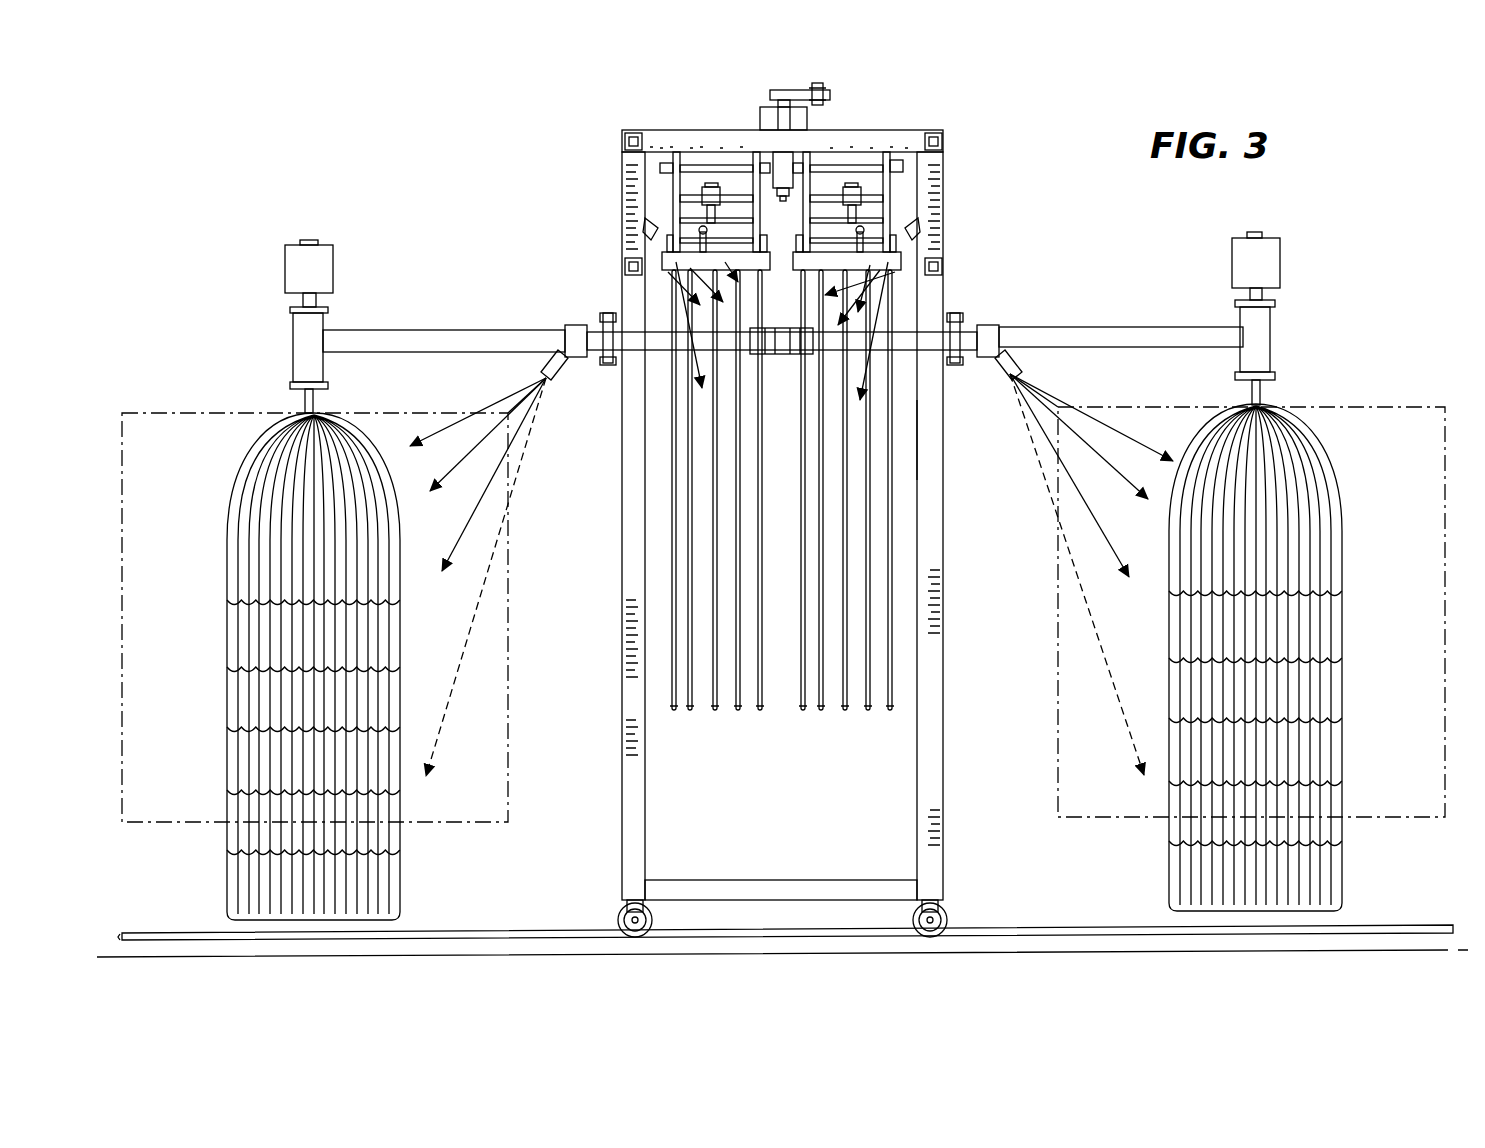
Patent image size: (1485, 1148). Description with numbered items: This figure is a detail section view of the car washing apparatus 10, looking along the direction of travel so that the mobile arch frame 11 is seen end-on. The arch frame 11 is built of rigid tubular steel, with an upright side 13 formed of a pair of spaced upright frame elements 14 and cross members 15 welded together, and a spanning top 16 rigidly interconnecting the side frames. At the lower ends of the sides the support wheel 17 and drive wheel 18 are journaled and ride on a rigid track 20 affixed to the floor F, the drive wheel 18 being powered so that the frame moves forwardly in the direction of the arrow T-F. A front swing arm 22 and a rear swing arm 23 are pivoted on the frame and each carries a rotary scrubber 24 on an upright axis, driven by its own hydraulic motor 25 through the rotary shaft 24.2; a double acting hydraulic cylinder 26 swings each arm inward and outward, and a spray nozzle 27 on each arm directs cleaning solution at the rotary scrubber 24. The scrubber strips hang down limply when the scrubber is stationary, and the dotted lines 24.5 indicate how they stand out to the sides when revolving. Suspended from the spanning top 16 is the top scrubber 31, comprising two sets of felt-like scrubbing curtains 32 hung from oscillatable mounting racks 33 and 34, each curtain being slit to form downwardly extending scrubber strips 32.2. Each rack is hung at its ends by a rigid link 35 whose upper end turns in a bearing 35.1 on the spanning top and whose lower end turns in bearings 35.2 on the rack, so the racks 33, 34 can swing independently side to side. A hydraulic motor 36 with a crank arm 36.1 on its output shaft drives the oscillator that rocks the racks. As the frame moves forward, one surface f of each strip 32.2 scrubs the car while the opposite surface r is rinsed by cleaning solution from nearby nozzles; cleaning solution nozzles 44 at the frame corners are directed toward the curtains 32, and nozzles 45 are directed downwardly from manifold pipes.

The car washing apparatus 10 is at (782, 510).
The mobile arch frame 11 is at (787, 504).
The upright side 13 is at (935, 441).
The upright frame elements 14 is at (622, 768).
The cross members 15 is at (670, 135).
The spanning top 16 is at (622, 140).
The support wheel 17 is at (622, 915).
The drive wheel 18 is at (948, 908).
The track 20 is at (483, 930).
The front swing arm 22 is at (378, 330).
The rear swing arm 23 is at (1122, 327).
The rotary scrubber 24 is at (240, 478).
The rotary shaft 24.2 is at (305, 400).
The dotted lines 24.5 is at (510, 596).
The hydraulic motor 25 is at (285, 268).
The double acting hydraulic cylinder 26 is at (782, 356).
The spray nozzle 27 is at (556, 376).
The top scrubber 31 is at (895, 528).
The scrubbing curtains 32 is at (788, 510).
The scrubber strips 32.2 is at (770, 712).
The mounting rack 33 is at (901, 262).
The mounting rack 34 is at (662, 262).
The rigid link 35 is at (673, 190).
The bearing 35.1 is at (903, 160).
The bearings 35.2 is at (861, 200).
The hydraulic motor 36 is at (805, 122).
The crank arm 36.1 is at (790, 90).
The cleaning solution nozzles 44 is at (645, 228).
The nozzles 45 is at (781, 331).
The floor F is at (447, 955).
The forward direction of travel arrow T-F is at (508, 228).
The surface of strip f is at (845, 465).
The surface of strip r is at (752, 580).